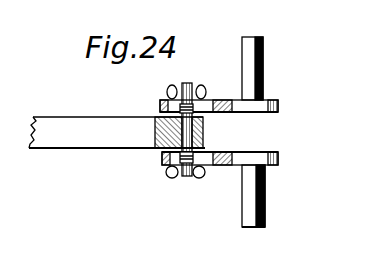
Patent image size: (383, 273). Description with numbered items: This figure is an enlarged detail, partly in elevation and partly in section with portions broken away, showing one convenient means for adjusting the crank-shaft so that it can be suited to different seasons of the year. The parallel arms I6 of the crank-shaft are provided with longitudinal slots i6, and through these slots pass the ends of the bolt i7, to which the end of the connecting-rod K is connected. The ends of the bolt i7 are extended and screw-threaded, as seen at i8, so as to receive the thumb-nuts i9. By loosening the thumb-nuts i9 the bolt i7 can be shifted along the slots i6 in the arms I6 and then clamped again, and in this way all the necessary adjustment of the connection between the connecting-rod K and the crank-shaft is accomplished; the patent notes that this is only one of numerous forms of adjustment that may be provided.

The connecting-rod K is at (117, 132).
The longitudinal slots i6 is at (208, 146).
The parallel arms I6 is at (242, 108).
The bolt i7 is at (160, 158).
The screw-threaded ends i8 is at (191, 76).
The thumb-nuts i9 is at (166, 91).